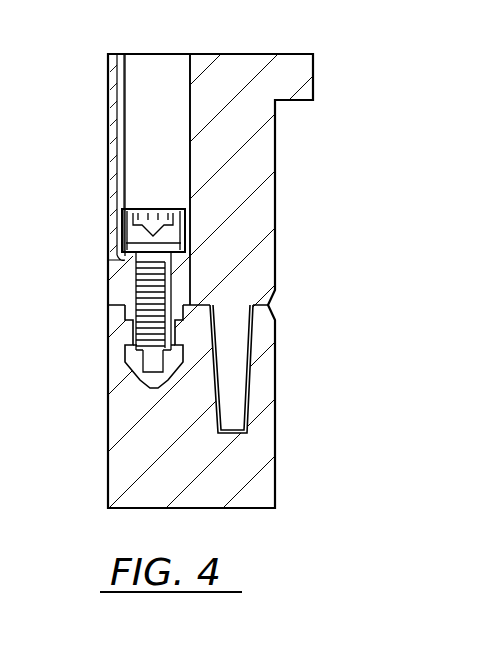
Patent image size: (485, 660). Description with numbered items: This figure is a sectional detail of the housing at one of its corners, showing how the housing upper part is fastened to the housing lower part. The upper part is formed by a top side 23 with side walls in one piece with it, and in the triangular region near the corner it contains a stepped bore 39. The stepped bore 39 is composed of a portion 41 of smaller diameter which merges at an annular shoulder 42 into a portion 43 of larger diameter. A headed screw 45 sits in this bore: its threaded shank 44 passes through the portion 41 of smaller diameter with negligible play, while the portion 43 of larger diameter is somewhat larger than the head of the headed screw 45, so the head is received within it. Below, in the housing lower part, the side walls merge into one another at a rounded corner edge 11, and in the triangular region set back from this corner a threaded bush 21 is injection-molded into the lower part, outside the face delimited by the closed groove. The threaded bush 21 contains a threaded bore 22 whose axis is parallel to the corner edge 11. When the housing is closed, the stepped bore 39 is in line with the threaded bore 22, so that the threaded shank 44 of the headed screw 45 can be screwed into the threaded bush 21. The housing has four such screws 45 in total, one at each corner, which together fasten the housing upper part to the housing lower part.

The top side 23 is at (305, 70).
The stepped bore 39 is at (157, 73).
The portion of larger diameter 43 is at (120, 81).
The headed screw 45 is at (150, 205).
The annular shoulder 42 is at (135, 258).
The portion of smaller diameter 41 is at (136, 278).
The threaded shank 44 is at (136, 292).
The corner edge 11 is at (125, 323).
The threaded bore 22 is at (125, 340).
The threaded bush 21 is at (135, 378).